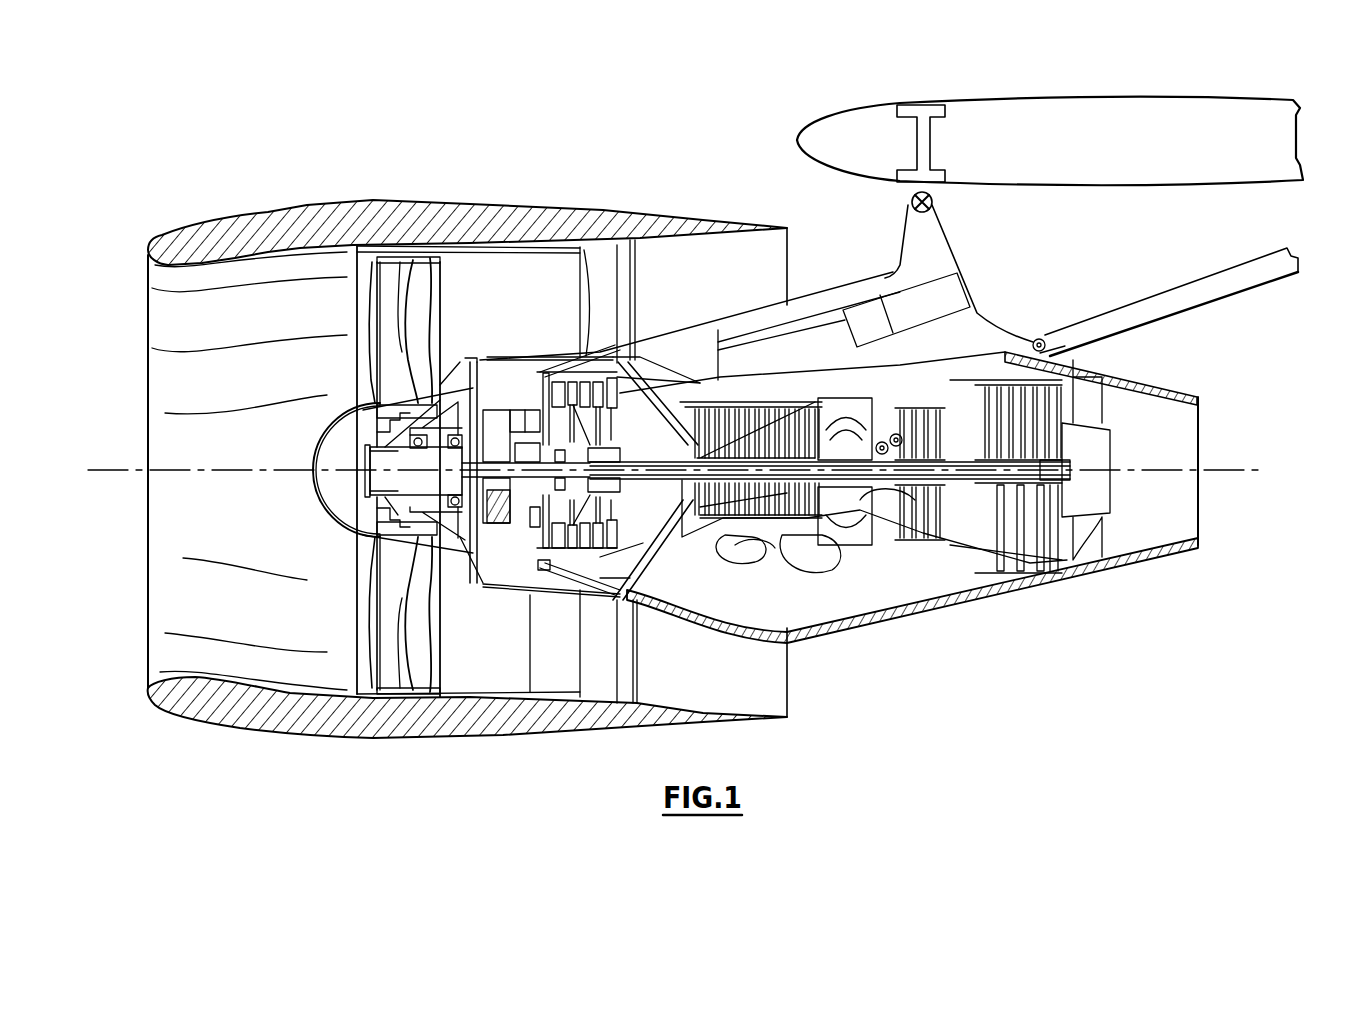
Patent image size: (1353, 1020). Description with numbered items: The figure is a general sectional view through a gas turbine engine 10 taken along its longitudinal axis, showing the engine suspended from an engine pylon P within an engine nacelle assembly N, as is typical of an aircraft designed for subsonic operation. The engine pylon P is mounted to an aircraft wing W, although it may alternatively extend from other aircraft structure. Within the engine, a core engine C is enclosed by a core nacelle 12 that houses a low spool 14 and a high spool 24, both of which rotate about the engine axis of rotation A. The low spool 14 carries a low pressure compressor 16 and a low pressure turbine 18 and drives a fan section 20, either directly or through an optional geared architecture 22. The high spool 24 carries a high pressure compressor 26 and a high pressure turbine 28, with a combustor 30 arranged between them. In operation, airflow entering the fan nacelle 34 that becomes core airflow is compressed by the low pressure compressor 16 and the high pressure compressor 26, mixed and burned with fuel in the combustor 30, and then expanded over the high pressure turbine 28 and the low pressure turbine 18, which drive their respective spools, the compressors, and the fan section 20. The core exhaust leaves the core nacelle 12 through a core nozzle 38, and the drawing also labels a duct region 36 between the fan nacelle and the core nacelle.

The gas turbine engine 10 is at (403, 138).
The core nacelle 12 is at (975, 600).
The low spool 14 is at (633, 493).
The low pressure compressor 16 is at (580, 378).
The low pressure turbine 18 is at (1038, 339).
The fan section 20 is at (400, 285).
The geared architecture 22 is at (453, 543).
The high spool 24 is at (882, 494).
The high pressure compressor 26 is at (793, 418).
The high pressure turbine 28 is at (940, 566).
The combustor 30 is at (838, 433).
The fan nacelle 34 is at (220, 705).
The bypass duct 36 is at (600, 668).
The core nozzle 38 is at (1183, 441).
The engine axis of rotation A is at (1255, 478).
The core engine C is at (875, 622).
The engine nacelle assembly N is at (640, 196).
The engine pylon P is at (1010, 237).
The aircraft wing W is at (1127, 133).